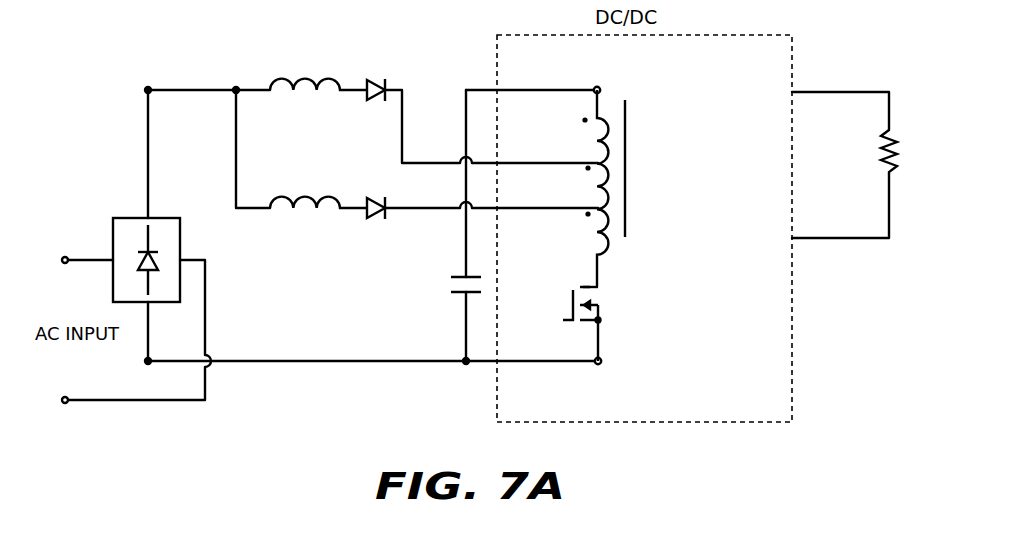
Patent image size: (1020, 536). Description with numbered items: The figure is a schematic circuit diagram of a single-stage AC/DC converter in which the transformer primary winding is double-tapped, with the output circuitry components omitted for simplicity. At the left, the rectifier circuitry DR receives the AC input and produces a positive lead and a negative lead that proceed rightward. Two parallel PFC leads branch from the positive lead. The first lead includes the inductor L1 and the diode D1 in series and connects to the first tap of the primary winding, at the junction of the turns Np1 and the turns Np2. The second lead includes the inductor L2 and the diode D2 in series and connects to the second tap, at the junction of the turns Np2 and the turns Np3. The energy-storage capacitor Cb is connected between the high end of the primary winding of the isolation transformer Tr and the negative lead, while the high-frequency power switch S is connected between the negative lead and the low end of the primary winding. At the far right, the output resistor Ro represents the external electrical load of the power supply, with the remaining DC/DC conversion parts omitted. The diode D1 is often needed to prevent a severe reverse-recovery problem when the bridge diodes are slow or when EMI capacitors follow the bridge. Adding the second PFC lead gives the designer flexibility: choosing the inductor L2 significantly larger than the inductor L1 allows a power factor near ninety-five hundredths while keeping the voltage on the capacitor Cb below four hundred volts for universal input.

The rectifier circuitry DR is at (146, 248).
The inductor L1 is at (318, 69).
The inductor L2 is at (318, 187).
The diode D1 is at (393, 64).
The diode D2 is at (395, 184).
The energy-storage capacitor Cb is at (455, 296).
The isolation transformer Tr is at (615, 174).
The primary winding upper part turns Np1 is at (565, 133).
The primary winding middle part turns Np2 is at (565, 181).
The primary winding lower part turns Np3 is at (565, 230).
The high-frequency power switch S is at (590, 324).
The output resistor Ro is at (900, 152).